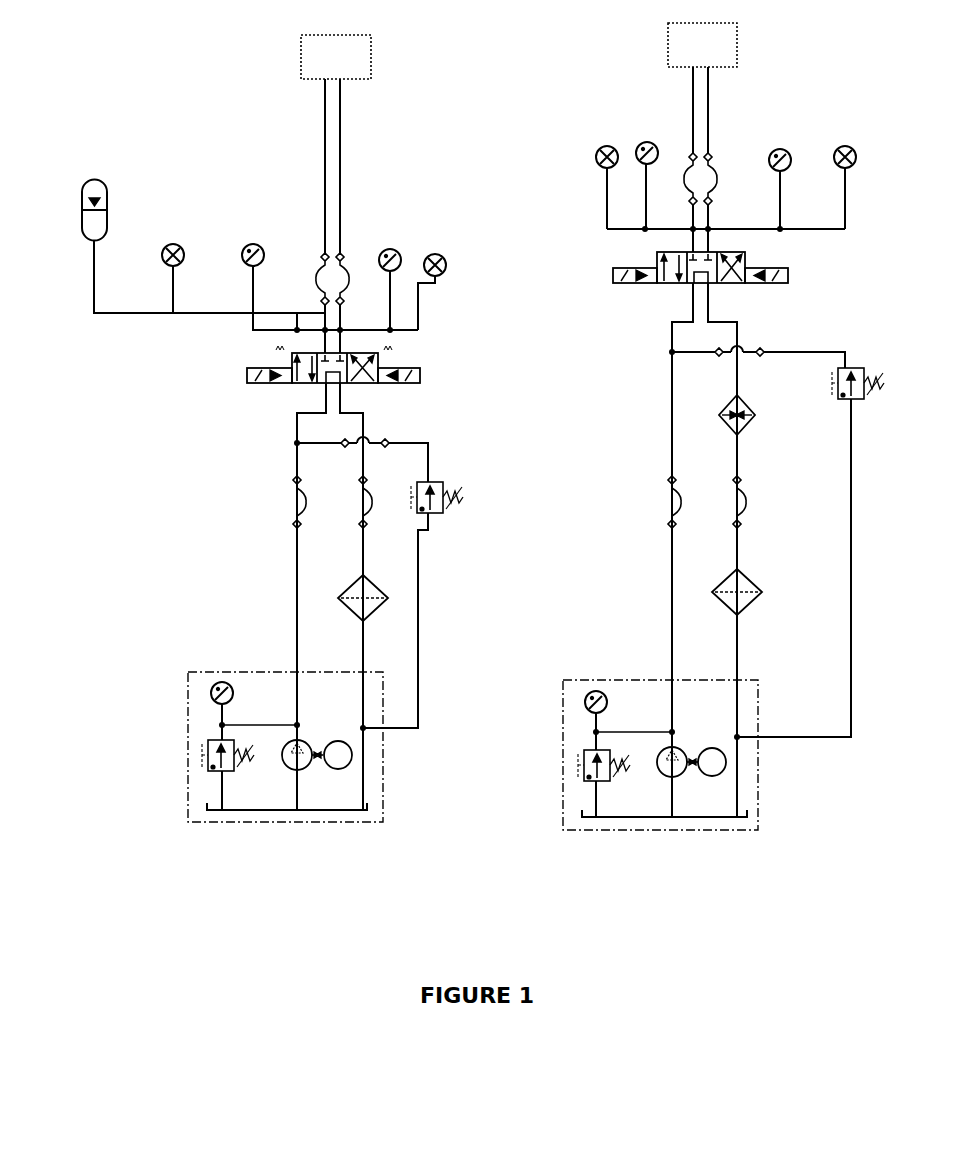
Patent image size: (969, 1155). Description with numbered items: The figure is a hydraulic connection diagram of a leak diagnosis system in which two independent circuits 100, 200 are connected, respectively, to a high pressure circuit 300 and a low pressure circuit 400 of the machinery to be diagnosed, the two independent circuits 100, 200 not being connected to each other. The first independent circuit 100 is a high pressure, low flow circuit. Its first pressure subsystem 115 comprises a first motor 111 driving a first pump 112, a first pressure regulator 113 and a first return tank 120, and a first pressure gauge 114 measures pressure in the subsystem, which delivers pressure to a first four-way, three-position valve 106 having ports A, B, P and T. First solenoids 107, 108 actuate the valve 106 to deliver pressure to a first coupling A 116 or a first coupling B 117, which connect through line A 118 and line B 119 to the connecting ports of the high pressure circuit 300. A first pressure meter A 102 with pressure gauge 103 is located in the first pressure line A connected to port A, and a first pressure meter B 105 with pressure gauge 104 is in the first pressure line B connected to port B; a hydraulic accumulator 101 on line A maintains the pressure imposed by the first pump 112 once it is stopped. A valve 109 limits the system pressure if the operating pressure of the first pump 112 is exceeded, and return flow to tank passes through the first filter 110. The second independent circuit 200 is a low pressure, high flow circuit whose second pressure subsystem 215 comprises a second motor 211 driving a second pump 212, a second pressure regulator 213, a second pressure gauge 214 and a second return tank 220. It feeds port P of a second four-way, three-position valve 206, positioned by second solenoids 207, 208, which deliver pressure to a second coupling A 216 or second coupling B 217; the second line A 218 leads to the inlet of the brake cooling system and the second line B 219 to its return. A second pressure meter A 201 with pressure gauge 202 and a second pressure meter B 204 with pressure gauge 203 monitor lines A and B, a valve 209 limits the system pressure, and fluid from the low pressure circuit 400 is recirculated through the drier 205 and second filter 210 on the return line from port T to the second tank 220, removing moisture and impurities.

The first independent circuit 100 is at (88, 58).
The hydraulic accumulator 101 is at (95, 176).
The first pressure meter A 102 is at (178, 237).
The pressure gauge 103 is at (254, 243).
The pressure gauge 104 is at (391, 248).
The first pressure meter B 105 is at (444, 244).
The first 4/3 valve 106 is at (291, 366).
The first solenoid 107 is at (246, 384).
The first solenoid 108 is at (421, 384).
The valve 109 is at (446, 516).
The first filter 110 is at (369, 590).
The first motor 111 is at (340, 769).
The first pump 112 is at (297, 771).
The first pressure regulator 113 is at (207, 762).
The first pressure gauge 114 is at (211, 700).
The first pressure subsystem 115 is at (218, 652).
The first coupling A 116 is at (318, 286).
The first coupling B 117 is at (348, 281).
The line A 118 is at (323, 154).
The line B 119 is at (342, 158).
The first return tank 120 is at (250, 813).
The second independent circuit 200 is at (594, 52).
The second pressure meter A 201 is at (596, 160).
The pressure gauge 202 is at (649, 142).
The pressure gauge 203 is at (782, 149).
The second pressure meter B 204 is at (853, 151).
The drier 205 is at (750, 419).
The second 4/3 valve 206 is at (656, 265).
The second solenoid 207 is at (612, 283).
The second solenoid 208 is at (790, 277).
The valve 209 is at (866, 399).
The second filter 210 is at (756, 583).
The second motor 211 is at (713, 777).
The second pump 212 is at (671, 778).
The second pressure regulator 213 is at (584, 779).
The second pressure gauge 214 is at (587, 702).
The second pressure subsystem 215 is at (598, 656).
The second coupling A 216 is at (684, 181).
The second coupling B 217 is at (717, 174).
The second line A 218 is at (690, 118).
The second line B 219 is at (710, 124).
The second return tank 220 is at (620, 820).
The high pressure circuit 300 is at (373, 52).
The low pressure circuit 400 is at (738, 46).